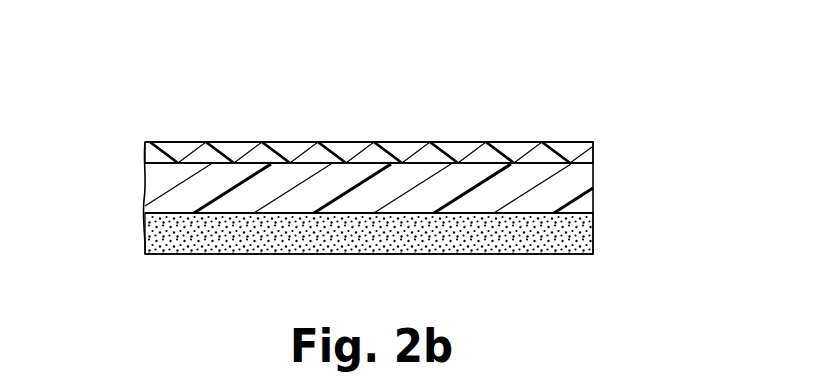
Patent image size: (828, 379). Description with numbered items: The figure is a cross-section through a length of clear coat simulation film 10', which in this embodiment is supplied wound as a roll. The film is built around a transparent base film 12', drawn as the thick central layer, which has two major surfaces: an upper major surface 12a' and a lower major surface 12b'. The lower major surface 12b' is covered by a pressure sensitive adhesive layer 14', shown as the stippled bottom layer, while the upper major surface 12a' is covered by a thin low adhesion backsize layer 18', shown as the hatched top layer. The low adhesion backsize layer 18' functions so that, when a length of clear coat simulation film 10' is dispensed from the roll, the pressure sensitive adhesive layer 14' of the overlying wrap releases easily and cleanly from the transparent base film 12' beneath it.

The clear coat simulation film 10' is at (368, 149).
The transparent base film 12' is at (412, 184).
The major surface 12a' is at (424, 125).
The major surface 12b' is at (415, 229).
The low adhesion backsize layer 18' is at (369, 126).
The pressure sensitive adhesive layer 14' is at (373, 260).